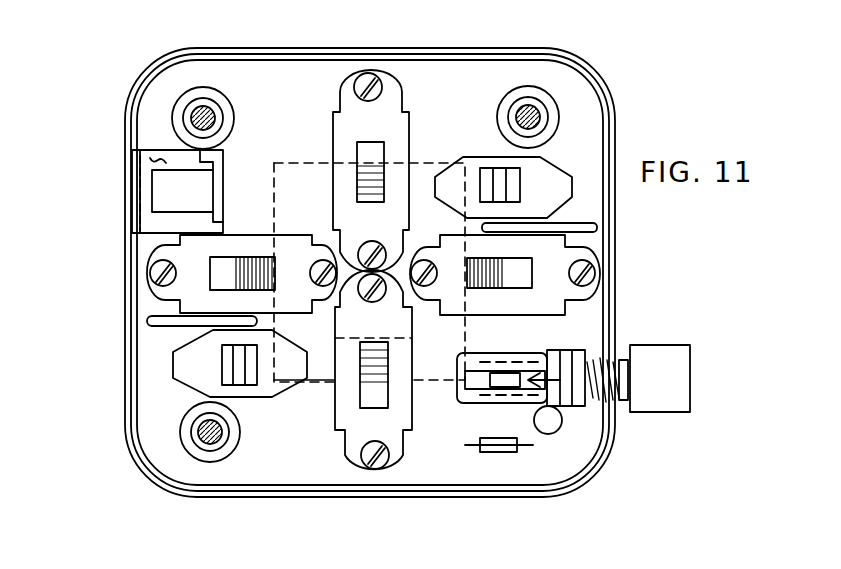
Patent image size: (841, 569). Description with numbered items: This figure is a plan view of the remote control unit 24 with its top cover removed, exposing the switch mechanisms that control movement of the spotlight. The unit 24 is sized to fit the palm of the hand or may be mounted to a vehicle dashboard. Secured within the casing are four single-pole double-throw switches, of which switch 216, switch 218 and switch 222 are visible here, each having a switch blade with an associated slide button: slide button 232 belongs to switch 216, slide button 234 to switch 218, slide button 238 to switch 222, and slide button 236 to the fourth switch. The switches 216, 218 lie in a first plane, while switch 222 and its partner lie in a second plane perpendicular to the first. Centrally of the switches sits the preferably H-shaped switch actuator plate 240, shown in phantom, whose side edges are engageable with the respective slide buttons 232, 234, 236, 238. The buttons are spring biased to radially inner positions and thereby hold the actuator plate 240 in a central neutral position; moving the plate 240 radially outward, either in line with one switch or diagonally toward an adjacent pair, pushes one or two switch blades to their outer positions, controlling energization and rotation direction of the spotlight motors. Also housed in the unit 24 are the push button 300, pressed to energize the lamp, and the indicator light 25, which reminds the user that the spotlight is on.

The remote control unit 24 is at (133, 85).
The switch actuator plate 240 is at (290, 162).
The slide button 234 is at (358, 160).
The single-pole double-throw switch 218 is at (415, 110).
The single-pole double-throw switch 216 is at (421, 426).
The slide button 232 is at (362, 378).
The single-pole double-throw switch 222 is at (586, 248).
The slide button 238 is at (512, 278).
The slide button 236 is at (232, 287).
The push button 300 is at (670, 412).
The indicator light 25 is at (556, 432).